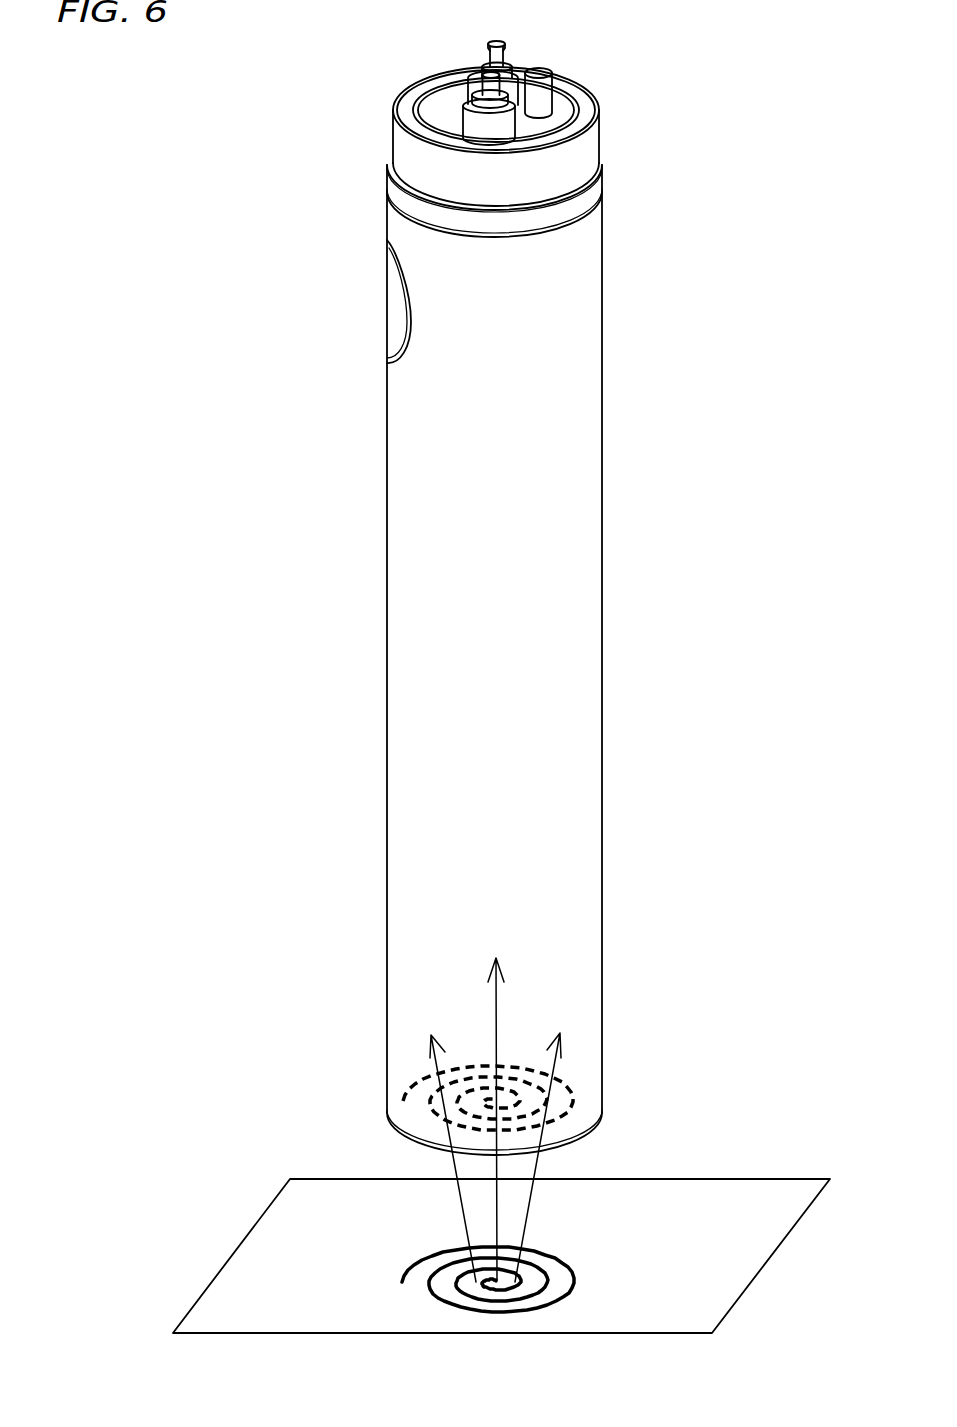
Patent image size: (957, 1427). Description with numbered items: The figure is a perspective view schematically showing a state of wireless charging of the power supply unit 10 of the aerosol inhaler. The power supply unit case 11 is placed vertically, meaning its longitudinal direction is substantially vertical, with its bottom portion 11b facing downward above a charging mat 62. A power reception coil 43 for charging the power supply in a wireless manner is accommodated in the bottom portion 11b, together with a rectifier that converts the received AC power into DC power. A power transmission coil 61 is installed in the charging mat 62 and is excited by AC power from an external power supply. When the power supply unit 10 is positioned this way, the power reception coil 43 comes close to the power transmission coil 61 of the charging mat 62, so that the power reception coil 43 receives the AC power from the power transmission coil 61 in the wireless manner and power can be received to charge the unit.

The power supply unit 10 is at (666, 257).
The power supply unit case 11 is at (601, 525).
The bottom portion 11b is at (402, 1140).
The power reception coil 43 is at (580, 1092).
The power transmission coil 61 is at (575, 1262).
The charging mat 62 is at (740, 1243).